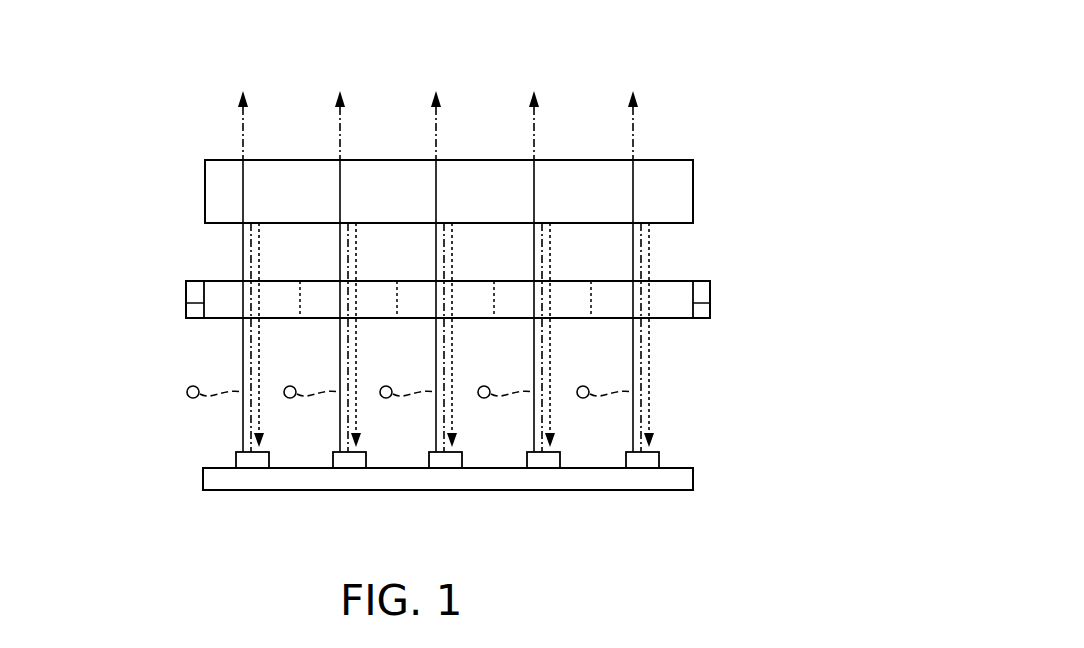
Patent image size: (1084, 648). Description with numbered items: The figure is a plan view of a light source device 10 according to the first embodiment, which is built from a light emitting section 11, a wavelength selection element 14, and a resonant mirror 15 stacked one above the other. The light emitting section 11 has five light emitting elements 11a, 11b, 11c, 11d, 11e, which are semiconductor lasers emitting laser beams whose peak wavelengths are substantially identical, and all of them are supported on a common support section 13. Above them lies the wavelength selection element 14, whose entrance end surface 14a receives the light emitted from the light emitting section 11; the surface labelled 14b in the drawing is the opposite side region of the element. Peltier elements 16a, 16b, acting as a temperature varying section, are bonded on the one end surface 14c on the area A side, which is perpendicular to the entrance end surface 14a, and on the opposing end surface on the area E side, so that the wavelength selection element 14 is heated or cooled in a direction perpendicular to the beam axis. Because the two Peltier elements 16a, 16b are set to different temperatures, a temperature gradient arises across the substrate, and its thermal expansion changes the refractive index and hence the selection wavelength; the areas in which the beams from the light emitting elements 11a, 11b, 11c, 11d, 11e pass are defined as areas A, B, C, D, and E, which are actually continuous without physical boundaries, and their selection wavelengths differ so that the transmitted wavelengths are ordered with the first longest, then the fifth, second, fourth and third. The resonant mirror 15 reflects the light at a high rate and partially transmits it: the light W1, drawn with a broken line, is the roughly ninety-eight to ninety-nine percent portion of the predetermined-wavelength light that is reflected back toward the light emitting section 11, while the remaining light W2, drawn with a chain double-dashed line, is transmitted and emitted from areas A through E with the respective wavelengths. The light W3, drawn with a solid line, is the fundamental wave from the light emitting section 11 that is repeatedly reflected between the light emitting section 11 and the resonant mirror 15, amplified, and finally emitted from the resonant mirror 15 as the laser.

The light source device 10 is at (682, 64).
The light emitting section 11 is at (432, 466).
The light emitting element 11a is at (270, 461).
The light emitting element 11b is at (367, 461).
The light emitting element 11c is at (463, 461).
The light emitting element 11d is at (561, 461).
The light emitting element 11e is at (660, 461).
The support section 13 is at (693, 480).
The wavelength selection element 14 is at (443, 269).
The entrance end surface 14a is at (685, 318).
The side surface 14b is at (710, 304).
The one end surface 14c is at (186, 303).
The resonant mirror 15 is at (693, 172).
The Peltier element 16a is at (186, 292).
The Peltier element 16b is at (710, 293).
The area A is at (278, 288).
The area B is at (375, 288).
The area C is at (471, 288).
The area D is at (569, 288).
The area E is at (668, 288).
The light W1 is at (261, 325).
The light W2 is at (243, 122).
The light W3 is at (242, 353).